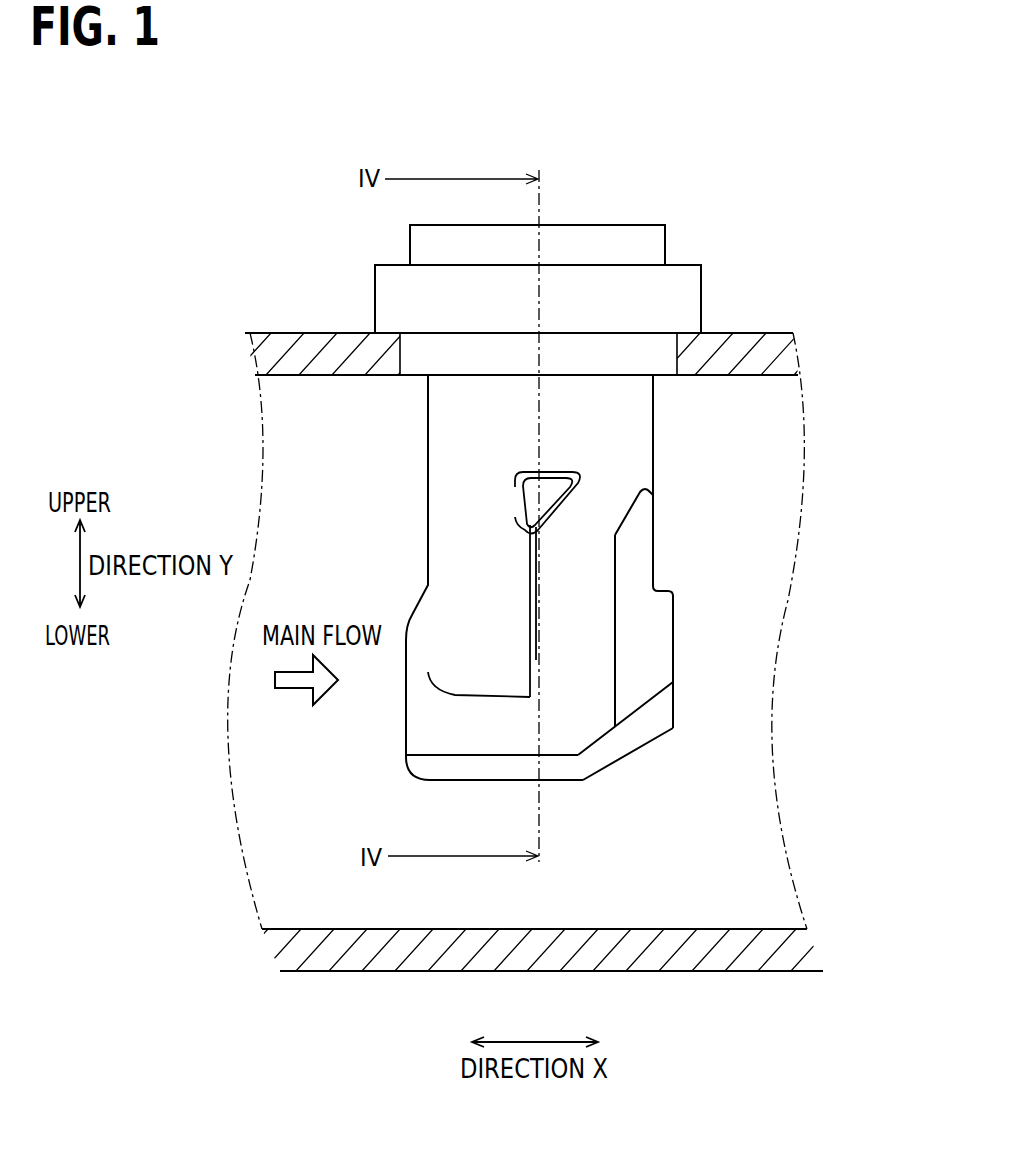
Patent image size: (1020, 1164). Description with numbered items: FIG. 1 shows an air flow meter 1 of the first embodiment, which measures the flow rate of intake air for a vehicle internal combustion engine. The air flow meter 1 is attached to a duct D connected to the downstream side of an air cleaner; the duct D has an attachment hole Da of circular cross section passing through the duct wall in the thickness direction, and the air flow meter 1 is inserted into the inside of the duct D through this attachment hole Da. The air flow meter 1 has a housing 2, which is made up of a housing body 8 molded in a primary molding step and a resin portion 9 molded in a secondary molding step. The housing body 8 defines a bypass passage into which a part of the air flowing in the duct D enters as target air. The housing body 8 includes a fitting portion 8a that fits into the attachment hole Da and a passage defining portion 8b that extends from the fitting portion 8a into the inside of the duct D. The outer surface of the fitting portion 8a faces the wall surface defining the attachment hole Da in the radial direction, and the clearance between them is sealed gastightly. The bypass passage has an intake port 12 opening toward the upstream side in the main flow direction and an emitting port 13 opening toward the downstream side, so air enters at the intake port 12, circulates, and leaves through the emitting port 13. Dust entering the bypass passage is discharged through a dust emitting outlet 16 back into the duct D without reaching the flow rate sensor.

The air flow meter 1 is at (577, 456).
The housing 2 is at (713, 254).
The resin portion 9 is at (653, 225).
The duct D is at (763, 345).
The attachment hole Da is at (677, 353).
The housing body 8 is at (493, 556).
The fitting portion 8a is at (428, 358).
The passage defining portion 8b is at (457, 547).
The intake port 12 is at (405, 712).
The emitting port 13 is at (536, 660).
The dust emitting outlet 16 is at (673, 643).